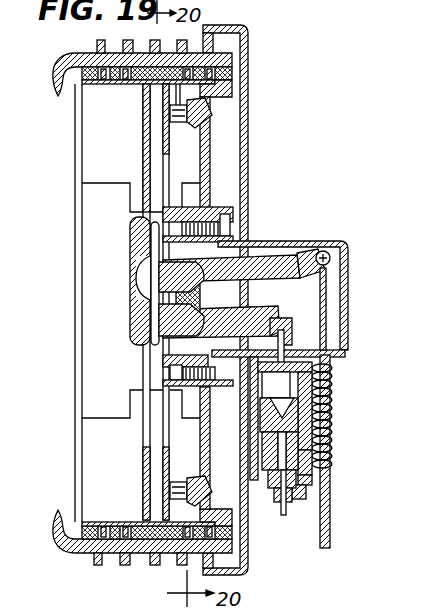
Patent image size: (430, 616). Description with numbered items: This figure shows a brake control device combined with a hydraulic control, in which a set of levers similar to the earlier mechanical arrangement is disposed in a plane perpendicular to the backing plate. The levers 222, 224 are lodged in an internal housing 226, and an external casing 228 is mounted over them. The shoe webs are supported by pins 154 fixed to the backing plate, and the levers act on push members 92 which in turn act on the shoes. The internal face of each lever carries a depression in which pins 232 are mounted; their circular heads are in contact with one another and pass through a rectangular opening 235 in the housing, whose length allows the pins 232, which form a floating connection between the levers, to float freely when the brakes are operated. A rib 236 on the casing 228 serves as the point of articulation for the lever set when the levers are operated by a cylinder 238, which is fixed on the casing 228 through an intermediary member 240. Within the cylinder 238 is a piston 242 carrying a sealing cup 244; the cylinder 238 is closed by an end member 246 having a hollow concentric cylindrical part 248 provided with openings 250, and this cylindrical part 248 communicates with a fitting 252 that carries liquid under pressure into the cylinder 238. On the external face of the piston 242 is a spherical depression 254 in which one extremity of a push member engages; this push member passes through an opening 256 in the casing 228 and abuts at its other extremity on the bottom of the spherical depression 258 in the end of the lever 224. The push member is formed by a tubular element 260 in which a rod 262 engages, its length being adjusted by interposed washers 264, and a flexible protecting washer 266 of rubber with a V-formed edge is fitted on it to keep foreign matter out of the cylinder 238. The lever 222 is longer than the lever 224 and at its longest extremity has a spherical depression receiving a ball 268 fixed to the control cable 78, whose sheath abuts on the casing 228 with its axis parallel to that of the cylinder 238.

The pins 154 is at (186, 122).
The internal housing 226 is at (135, 240).
The push members 92 is at (156, 262).
The pins 232 is at (185, 308).
The rectangular opening 235 is at (246, 237).
The lever 222 is at (232, 268).
The lever 224 is at (232, 326).
The spherical depression 258 is at (283, 332).
The rib 236 is at (318, 246).
The external casing 228 is at (350, 244).
The ball 268 is at (332, 262).
The rod 262 is at (318, 335).
The opening 256 is at (288, 347).
The intermediary member 240 is at (342, 350).
The flexible protecting washer 266 is at (315, 381).
The spherical depression 254 is at (318, 404).
The cylinder 238 is at (333, 419).
The washers 264 is at (300, 441).
The sealing cup 244 is at (308, 457).
The hollow concentric cylindrical part 248 is at (312, 480).
The end member 246 is at (306, 492).
The control cable 78 is at (330, 535).
The tubular element 260 is at (270, 388).
The piston 242 is at (268, 418).
The openings 250 is at (255, 470).
The fitting 252 is at (272, 505).